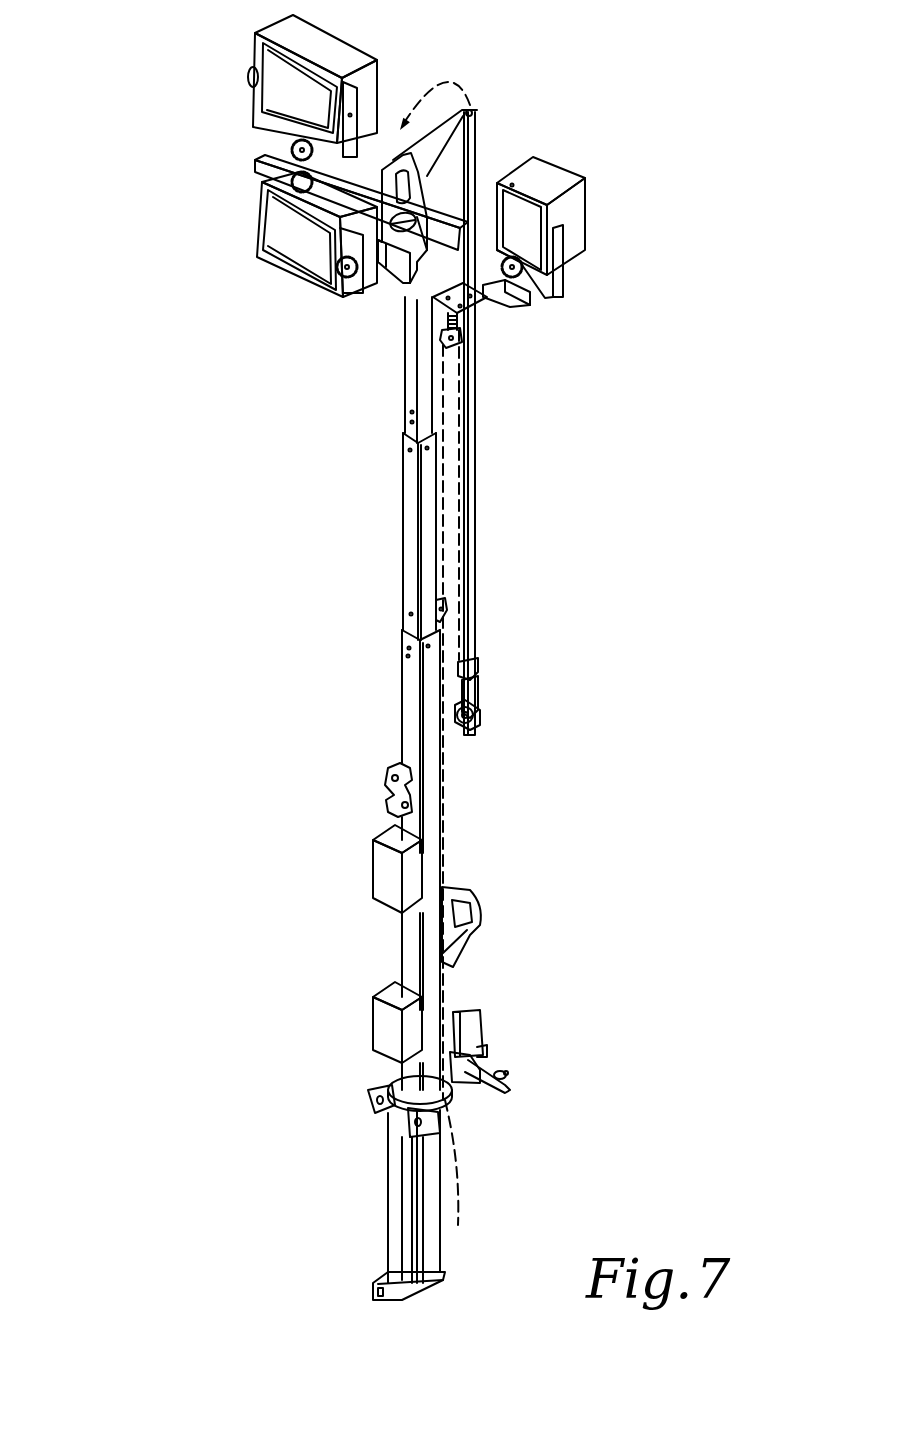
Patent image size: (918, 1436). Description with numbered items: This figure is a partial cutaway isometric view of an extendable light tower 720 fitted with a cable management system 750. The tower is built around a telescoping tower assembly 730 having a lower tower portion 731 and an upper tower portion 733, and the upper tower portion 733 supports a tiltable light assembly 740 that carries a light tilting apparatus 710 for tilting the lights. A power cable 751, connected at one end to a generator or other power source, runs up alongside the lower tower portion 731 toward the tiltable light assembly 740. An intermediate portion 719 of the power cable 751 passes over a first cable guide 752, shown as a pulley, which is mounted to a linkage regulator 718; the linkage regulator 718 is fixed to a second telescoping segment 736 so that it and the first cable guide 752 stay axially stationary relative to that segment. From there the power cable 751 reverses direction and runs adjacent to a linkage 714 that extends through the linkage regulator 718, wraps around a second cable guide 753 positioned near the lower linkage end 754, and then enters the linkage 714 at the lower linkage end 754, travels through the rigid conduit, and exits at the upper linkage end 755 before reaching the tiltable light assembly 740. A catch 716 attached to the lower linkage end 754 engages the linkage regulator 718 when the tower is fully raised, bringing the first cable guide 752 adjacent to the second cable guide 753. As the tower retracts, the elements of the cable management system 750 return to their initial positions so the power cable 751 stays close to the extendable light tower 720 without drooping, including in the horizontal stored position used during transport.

The light tilting apparatus 710 is at (535, 50).
The linkage 714 is at (473, 345).
The catch 716 is at (466, 668).
The linkage regulator 718 is at (440, 312).
The intermediate portion 719 is at (452, 380).
The extendable light tower 720 is at (668, 945).
The telescoping tower assembly 730 is at (370, 637).
The lower tower portion 731 is at (350, 1197).
The upper tower portion 733 is at (225, 157).
The second telescoping segment 736 is at (405, 497).
The tiltable light assembly 740 is at (170, 93).
The cable management system 750 is at (545, 542).
The power cable 751 is at (448, 820).
The first cable guide 752 is at (444, 345).
The second cable guide 753 is at (478, 725).
The lower linkage end 754 is at (475, 690).
The upper linkage end 755 is at (472, 120).